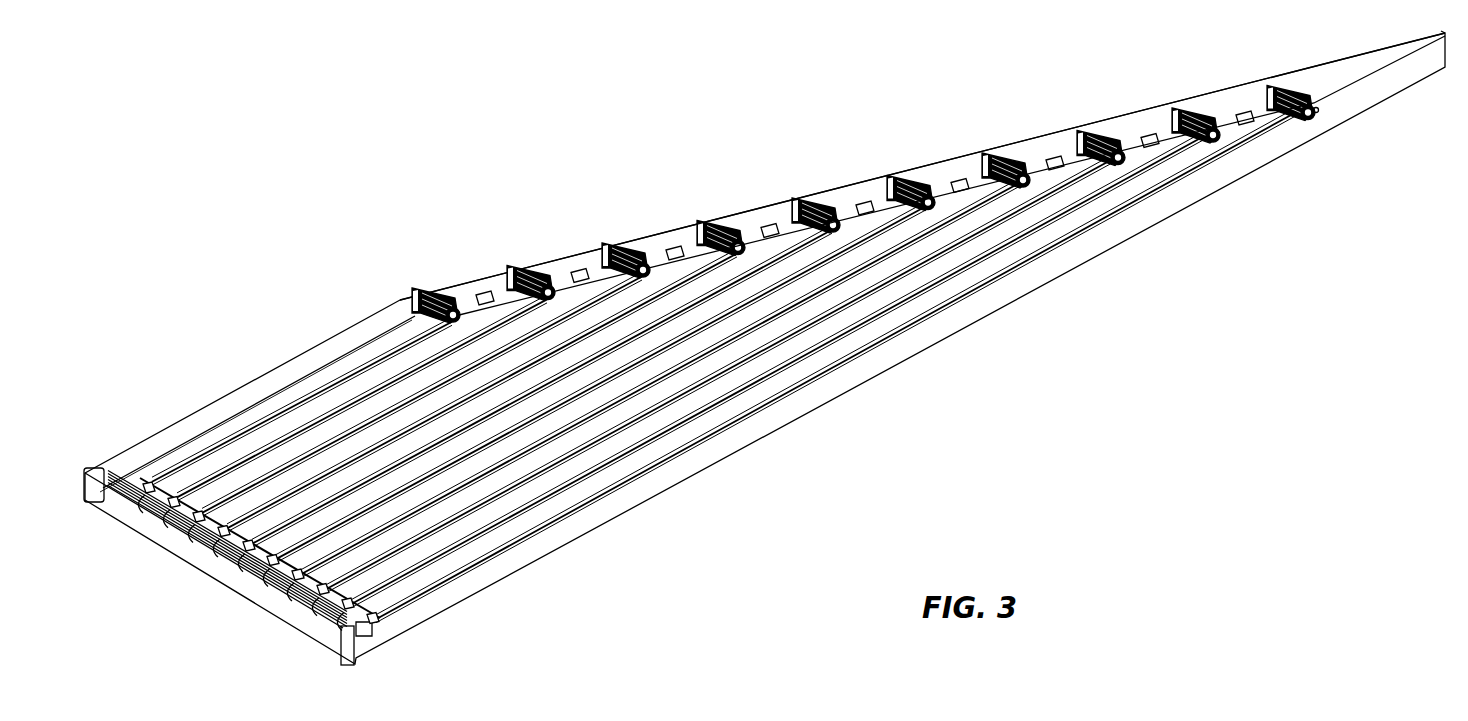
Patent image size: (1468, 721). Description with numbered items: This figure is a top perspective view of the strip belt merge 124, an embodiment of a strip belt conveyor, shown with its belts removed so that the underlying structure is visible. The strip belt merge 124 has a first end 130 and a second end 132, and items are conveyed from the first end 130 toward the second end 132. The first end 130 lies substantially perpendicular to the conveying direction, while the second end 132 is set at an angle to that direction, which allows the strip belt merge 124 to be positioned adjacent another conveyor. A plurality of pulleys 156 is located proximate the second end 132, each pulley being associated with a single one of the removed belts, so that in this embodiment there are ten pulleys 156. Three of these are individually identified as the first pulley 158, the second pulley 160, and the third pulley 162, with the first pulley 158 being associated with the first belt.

The strip belt merge 124 is at (298, 236).
The first end 130 is at (210, 575).
The second end 132 is at (847, 172).
The pulleys 156 is at (1088, 128).
The first pulley 158 is at (432, 287).
The second pulley 160 is at (527, 268).
The third pulley 162 is at (620, 243).